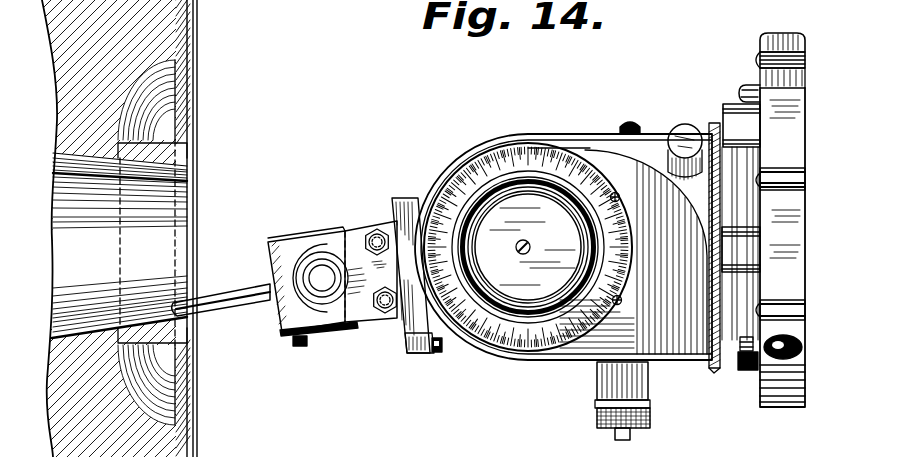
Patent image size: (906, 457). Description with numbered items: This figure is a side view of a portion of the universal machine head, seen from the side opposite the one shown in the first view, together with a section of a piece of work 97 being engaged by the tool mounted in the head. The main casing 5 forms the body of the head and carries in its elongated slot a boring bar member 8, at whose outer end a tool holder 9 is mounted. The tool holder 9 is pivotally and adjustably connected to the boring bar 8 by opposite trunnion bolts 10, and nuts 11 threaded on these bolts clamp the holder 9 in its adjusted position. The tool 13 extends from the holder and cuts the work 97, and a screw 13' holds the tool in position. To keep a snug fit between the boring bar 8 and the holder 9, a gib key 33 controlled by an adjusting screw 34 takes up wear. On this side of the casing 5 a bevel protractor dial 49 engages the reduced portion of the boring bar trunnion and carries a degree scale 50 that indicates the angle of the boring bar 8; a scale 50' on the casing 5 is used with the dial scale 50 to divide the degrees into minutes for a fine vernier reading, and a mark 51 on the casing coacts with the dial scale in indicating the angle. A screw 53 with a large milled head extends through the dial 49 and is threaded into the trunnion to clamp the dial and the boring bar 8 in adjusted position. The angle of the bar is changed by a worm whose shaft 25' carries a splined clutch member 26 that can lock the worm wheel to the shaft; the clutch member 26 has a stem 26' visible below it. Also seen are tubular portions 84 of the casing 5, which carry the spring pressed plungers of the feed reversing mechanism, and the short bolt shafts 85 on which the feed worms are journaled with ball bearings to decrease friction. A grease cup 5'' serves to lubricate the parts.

The main casing 5 is at (610, 220).
The grease cup 5'' is at (685, 142).
The boring bar member 8 is at (398, 318).
The tool holder 9 is at (299, 303).
The trunnion bolts 10 is at (322, 290).
The nuts 11 is at (332, 295).
The tool 13 is at (221, 313).
The screw 13' is at (287, 357).
The shaft 25' is at (641, 114).
The clutch member 26 is at (643, 395).
The knob stem 26' is at (615, 442).
The gib key 33 is at (428, 353).
The adjusting screw 34 is at (437, 352).
The bevel protractor dial 49 is at (588, 316).
The degree scale 50 is at (528, 247).
The scale 50' is at (622, 233).
The mark 51 is at (413, 245).
The screw 53 is at (584, 233).
The tubular portions 84 is at (722, 118).
The bolt shafts 85 is at (740, 88).
The piece of work 97 is at (190, 440).